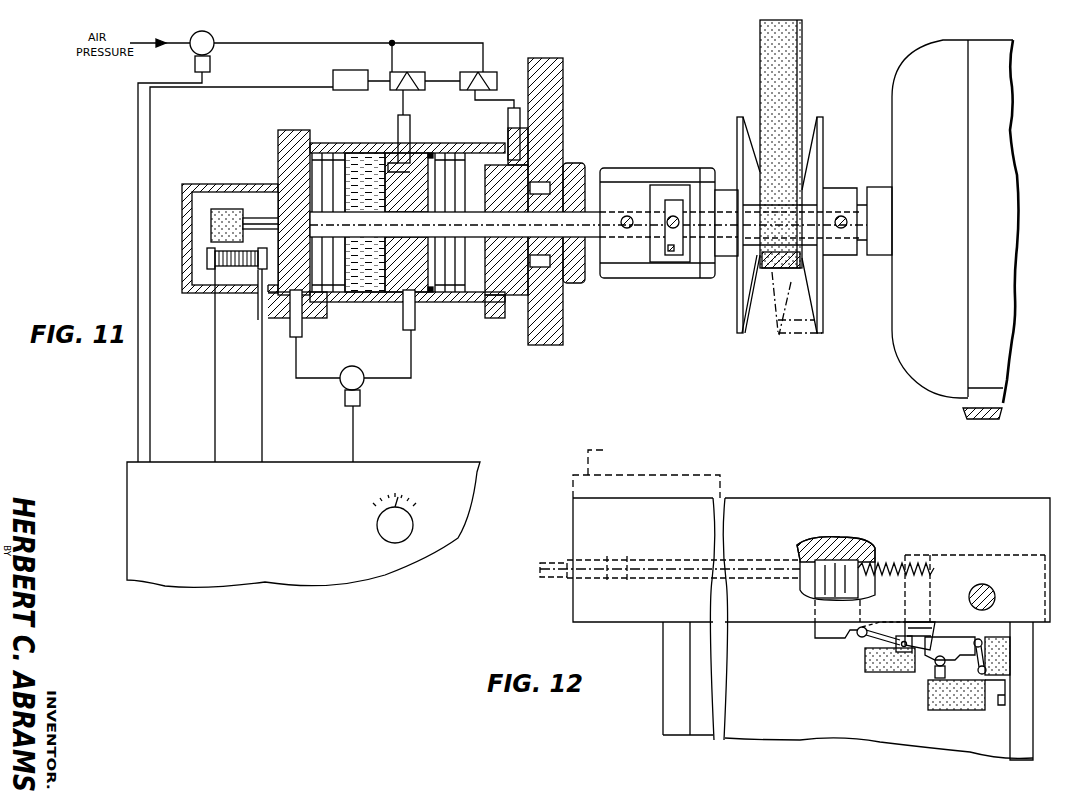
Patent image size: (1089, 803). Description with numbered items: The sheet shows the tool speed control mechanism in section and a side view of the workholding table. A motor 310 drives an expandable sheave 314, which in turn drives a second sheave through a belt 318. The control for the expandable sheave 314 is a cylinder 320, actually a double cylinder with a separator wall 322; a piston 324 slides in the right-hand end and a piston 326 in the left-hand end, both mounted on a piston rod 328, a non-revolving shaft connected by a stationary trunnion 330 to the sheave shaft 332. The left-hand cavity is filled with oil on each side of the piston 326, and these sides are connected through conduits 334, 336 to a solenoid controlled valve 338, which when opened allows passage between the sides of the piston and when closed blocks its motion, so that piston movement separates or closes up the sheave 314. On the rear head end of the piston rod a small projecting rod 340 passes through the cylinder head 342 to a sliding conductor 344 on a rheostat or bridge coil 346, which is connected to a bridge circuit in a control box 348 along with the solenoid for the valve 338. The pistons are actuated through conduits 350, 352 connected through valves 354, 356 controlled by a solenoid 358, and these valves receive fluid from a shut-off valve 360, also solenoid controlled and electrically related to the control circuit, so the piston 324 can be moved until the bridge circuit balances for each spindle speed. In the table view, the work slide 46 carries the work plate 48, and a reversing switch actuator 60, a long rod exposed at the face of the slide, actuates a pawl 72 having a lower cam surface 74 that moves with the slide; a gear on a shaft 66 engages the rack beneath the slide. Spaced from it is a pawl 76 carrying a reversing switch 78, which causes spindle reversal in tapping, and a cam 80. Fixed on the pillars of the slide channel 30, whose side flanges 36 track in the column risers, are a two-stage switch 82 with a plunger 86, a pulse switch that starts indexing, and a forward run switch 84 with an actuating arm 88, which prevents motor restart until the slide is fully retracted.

In FIG. 11, the motor 310 is at (951, 137).
In FIG. 11, the expandable sheave 314 is at (748, 330).
In FIG. 11, the belt 318 is at (793, 62).
In FIG. 11, the cylinder 320 is at (442, 148).
In FIG. 11, the separator wall 322 is at (390, 150).
In FIG. 11, the piston 324 is at (462, 182).
In FIG. 11, the piston 326 is at (322, 199).
In FIG. 11, the piston rod 328 is at (480, 210).
In FIG. 11, the stationary trunnion 330 is at (625, 175).
In FIG. 11, the sheave shaft 332 is at (680, 262).
In FIG. 11, the conduit 334 is at (298, 345).
In FIG. 11, the conduit 336 is at (414, 330).
In FIG. 11, the solenoid controlled valve 338 is at (342, 384).
In FIG. 11, the projecting rod 340 is at (268, 212).
In FIG. 11, the cylinder head 342 is at (290, 132).
In FIG. 11, the sliding conductor 344 is at (212, 246).
In FIG. 11, the bridge coil 346 is at (215, 258).
In FIG. 11, the control box 348 is at (142, 474).
In FIG. 11, the conduit 350 is at (408, 130).
In FIG. 11, the conduit 352 is at (514, 108).
In FIG. 11, the valve 354 is at (410, 72).
In FIG. 11, the valve 356 is at (470, 72).
In FIG. 11, the solenoid 358 is at (346, 70).
In FIG. 11, the shut-off valve 360 is at (214, 47).
In FIG. 12, the slide channel 30 is at (805, 730).
In FIG. 12, the side flanges 36 is at (681, 725).
In FIG. 12, the work slide 46 is at (790, 508).
In FIG. 12, the work plate 48 is at (696, 486).
In FIG. 12, the reversing switch actuator 60 is at (572, 580).
In FIG. 12, the shaft 66 is at (985, 585).
In FIG. 12, the pawl 72 is at (815, 596).
In FIG. 12, the cam surface 74 is at (857, 634).
In FIG. 12, the pawl 76 is at (932, 590).
In FIG. 12, the reversing switch 78 is at (880, 670).
In FIG. 12, the cam 80 is at (936, 640).
In FIG. 12, the two-stage switch 82 is at (948, 710).
In FIG. 12, the forward run switch 84 is at (998, 640).
In FIG. 12, the plunger 86 is at (934, 668).
In FIG. 12, the actuating arm 88 is at (986, 660).